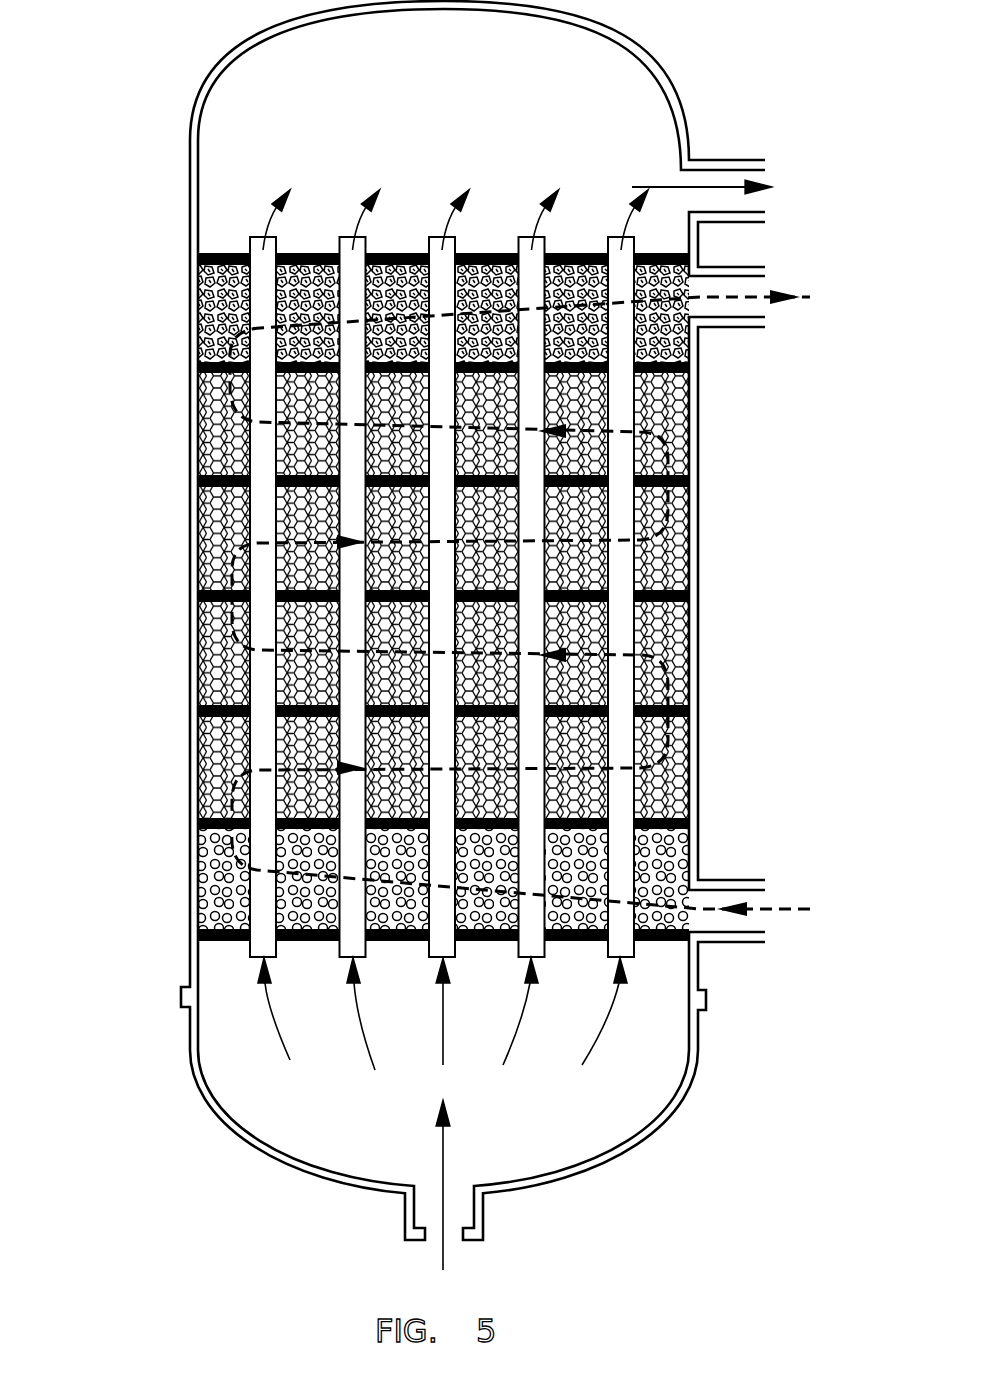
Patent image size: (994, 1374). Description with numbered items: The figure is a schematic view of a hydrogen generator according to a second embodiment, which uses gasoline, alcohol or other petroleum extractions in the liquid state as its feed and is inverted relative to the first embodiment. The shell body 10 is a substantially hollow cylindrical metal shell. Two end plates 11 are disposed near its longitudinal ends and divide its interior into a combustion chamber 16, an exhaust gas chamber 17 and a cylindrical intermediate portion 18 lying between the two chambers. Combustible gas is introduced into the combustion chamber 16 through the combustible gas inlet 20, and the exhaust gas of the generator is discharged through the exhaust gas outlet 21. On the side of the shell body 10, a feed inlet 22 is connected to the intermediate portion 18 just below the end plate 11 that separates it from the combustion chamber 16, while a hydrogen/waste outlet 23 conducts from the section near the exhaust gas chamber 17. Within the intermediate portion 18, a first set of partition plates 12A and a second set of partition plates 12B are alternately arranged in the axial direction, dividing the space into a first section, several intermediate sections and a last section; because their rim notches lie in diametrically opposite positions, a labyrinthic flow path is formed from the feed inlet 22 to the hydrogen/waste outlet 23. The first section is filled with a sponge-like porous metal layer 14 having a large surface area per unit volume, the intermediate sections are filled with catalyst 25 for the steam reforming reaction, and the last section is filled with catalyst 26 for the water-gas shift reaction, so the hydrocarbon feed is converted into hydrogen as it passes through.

The shell body 10 is at (436, 640).
The end plates 11 is at (217, 252).
The first set of partition plates 12A is at (213, 473).
The second set of partition plates 12B is at (672, 387).
The porous metal layer 14 is at (213, 893).
The combustion chamber 16 is at (633, 1107).
The exhaust gas chamber 17 is at (580, 63).
The intermediate portion 18 is at (693, 617).
The combustible gas inlet 20 is at (480, 1220).
The exhaust gas outlet 21 is at (743, 158).
The feed inlet 22 is at (718, 870).
The hydrogen/waste outlet 23 is at (741, 340).
The catalyst for the steam reforming reaction 25 is at (207, 552).
The catalyst for the water-gas shift reaction 26 is at (205, 327).